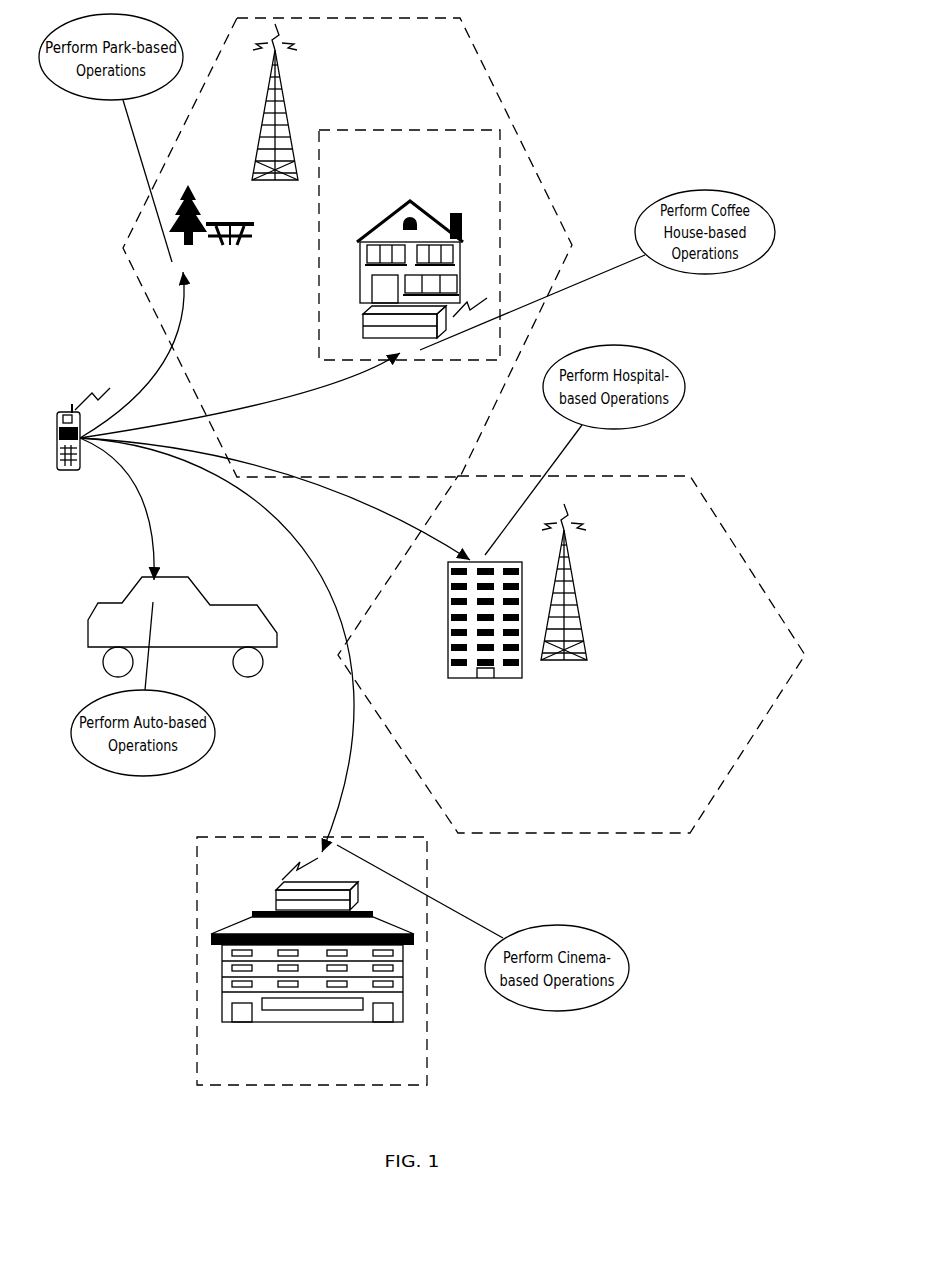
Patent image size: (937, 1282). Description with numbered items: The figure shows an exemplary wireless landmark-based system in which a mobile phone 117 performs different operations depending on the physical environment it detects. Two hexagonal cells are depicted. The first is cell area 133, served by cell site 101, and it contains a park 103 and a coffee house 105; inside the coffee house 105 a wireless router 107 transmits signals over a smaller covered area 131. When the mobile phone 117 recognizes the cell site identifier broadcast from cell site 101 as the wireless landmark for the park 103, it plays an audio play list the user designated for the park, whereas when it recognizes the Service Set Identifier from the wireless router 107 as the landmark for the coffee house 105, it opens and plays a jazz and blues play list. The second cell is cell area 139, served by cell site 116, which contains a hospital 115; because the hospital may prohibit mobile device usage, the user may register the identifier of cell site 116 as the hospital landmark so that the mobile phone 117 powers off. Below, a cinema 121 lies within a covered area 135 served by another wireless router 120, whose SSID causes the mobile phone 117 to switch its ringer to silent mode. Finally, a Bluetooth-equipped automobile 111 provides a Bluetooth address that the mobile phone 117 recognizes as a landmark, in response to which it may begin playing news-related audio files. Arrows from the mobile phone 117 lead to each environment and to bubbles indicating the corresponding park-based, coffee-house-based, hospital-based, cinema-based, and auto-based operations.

The cell site 101 is at (262, 237).
The park 103 is at (198, 289).
The coffee house 105 is at (392, 187).
The wireless router 107 is at (363, 320).
The Bluetooth-equipped automobile 111 is at (214, 604).
The hospital 115 is at (472, 725).
The cell site 116 is at (549, 719).
The mobile phone 117 is at (58, 521).
The wireless router 120 is at (276, 893).
The cinema 121 is at (298, 1066).
The covered area 131 is at (487, 187).
The cell area 133 is at (455, 85).
The covered area 135 is at (407, 1055).
The cell area 139 is at (602, 810).